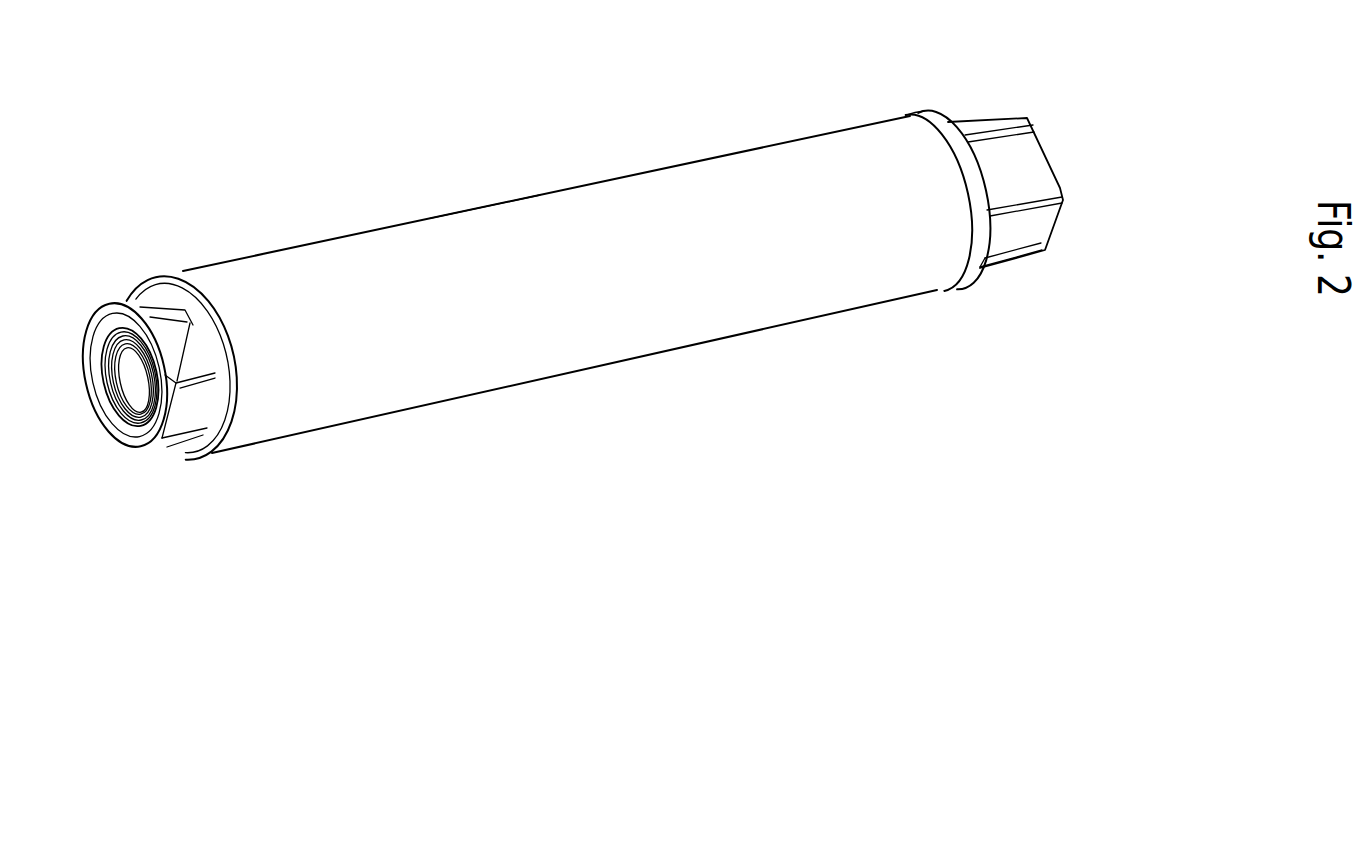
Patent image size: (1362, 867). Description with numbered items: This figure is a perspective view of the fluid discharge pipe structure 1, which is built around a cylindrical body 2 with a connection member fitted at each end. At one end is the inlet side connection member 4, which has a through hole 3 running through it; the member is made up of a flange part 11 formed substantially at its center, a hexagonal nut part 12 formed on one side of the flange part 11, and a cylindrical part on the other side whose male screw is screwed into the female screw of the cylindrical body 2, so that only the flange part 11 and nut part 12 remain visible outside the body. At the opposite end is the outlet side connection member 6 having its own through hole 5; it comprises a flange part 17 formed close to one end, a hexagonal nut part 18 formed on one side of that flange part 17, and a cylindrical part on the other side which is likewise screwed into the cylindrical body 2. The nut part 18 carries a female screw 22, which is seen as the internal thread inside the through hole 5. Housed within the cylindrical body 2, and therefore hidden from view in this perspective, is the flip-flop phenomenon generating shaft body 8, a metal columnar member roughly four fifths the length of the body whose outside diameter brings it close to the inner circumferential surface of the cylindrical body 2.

The fluid discharge pipe structure 1 is at (657, 165).
The cylindrical body 2 is at (660, 340).
The through hole 3 is at (1050, 153).
The inlet side connection member 4 is at (1008, 250).
The through hole 5 is at (148, 380).
The outlet side connection member 6 is at (130, 302).
The flip-flop phenomenon generating shaft body 8 is at (483, 220).
The flange part 11 is at (928, 120).
The hexagonal nut part 12 is at (990, 118).
The flange part 17 is at (183, 279).
The hexagonal nut part 18 is at (120, 307).
The female screw 22 is at (120, 363).